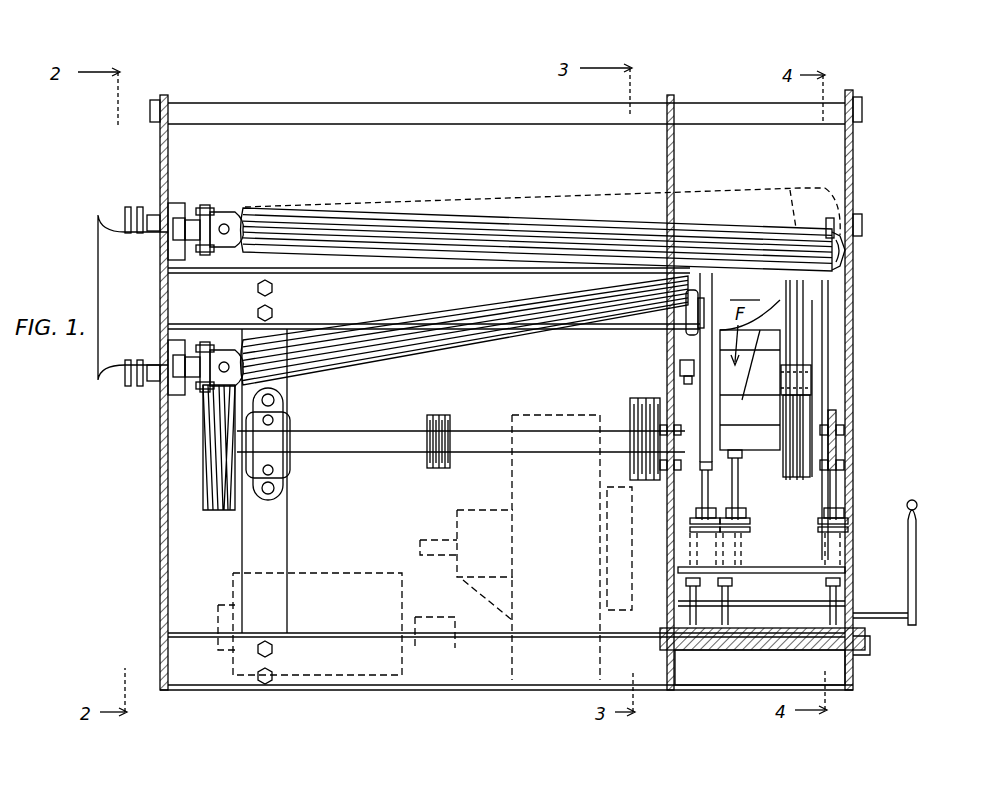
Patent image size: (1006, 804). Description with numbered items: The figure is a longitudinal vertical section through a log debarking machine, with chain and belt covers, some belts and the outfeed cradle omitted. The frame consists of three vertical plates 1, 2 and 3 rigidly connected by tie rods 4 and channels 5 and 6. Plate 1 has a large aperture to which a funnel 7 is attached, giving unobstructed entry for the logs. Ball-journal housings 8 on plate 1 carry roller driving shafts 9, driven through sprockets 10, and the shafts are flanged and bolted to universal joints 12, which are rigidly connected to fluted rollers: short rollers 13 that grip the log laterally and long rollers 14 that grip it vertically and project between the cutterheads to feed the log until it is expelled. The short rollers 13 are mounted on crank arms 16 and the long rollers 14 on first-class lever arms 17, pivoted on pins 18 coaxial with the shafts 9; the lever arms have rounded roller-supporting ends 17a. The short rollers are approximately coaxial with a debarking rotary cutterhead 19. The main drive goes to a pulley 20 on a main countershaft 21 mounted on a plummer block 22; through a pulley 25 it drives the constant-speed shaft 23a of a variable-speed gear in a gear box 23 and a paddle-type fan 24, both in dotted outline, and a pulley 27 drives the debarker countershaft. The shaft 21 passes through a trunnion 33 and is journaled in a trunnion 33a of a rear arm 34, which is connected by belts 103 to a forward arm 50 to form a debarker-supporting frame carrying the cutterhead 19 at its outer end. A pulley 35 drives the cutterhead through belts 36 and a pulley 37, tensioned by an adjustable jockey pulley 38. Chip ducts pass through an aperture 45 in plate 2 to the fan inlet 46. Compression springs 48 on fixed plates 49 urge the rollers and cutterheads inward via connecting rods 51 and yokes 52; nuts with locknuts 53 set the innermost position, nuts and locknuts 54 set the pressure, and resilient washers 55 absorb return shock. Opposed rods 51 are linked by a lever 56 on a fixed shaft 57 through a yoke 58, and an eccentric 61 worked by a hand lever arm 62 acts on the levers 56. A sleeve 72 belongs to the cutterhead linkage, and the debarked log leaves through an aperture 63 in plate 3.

The vertical plate 1 is at (160, 158).
The vertical plate 2 is at (675, 160).
The vertical plate 3 is at (853, 150).
The tie rod 4 is at (160, 103).
The channel 5 is at (205, 272).
The channel 6 is at (490, 633).
The funnel 7 is at (98, 255).
The ball-journal housing 8 is at (160, 205).
The roller driving shaft 9 is at (188, 222).
The sprocket 10 is at (128, 212).
The universal joint 12 is at (226, 213).
The short roller 13 is at (365, 363).
The long roller 14 is at (320, 208).
The crank arm 16 is at (690, 335).
The lever arm 17 is at (840, 245).
The roller-supporting end 17a is at (842, 262).
The pin 18 is at (862, 226).
The rotary cutterhead 19 is at (775, 296).
The pulley 20 is at (200, 440).
The main countershaft 21 is at (345, 431).
The plummer block 22 is at (282, 418).
The gear box 23 is at (330, 565).
The constant-speed shaft 23a is at (445, 617).
The paddle-type fan 24 is at (480, 500).
The pulley 25 is at (450, 418).
The pulley 27 is at (640, 400).
The trunnion 33 is at (716, 465).
The trunnion 33a is at (848, 458).
The rear arm 34 is at (812, 390).
The pulley 35 is at (814, 412).
The belt 36 is at (805, 332).
The pulley 37 is at (792, 311).
The jockey pulley 38 is at (812, 375).
The aperture 45 is at (640, 520).
The fan inlet 46 is at (632, 565).
The compression spring 48 is at (750, 521).
The fixed plate 49 is at (848, 572).
The forward arm 50 is at (718, 380).
The connecting rod 51 is at (722, 482).
The yoke 52 is at (730, 458).
The nuts with locknuts 53 is at (709, 592).
The nuts and locknuts 54 is at (738, 508).
The washer 55 is at (732, 582).
The lever 56 is at (860, 622).
The fixed shaft 57 is at (865, 640).
The yoke 58 is at (770, 650).
The eccentric 61 is at (708, 650).
The lever arm 62 is at (908, 530).
The aperture 63 is at (830, 350).
The sleeve 72 is at (700, 318).
The belt 103 is at (744, 375).